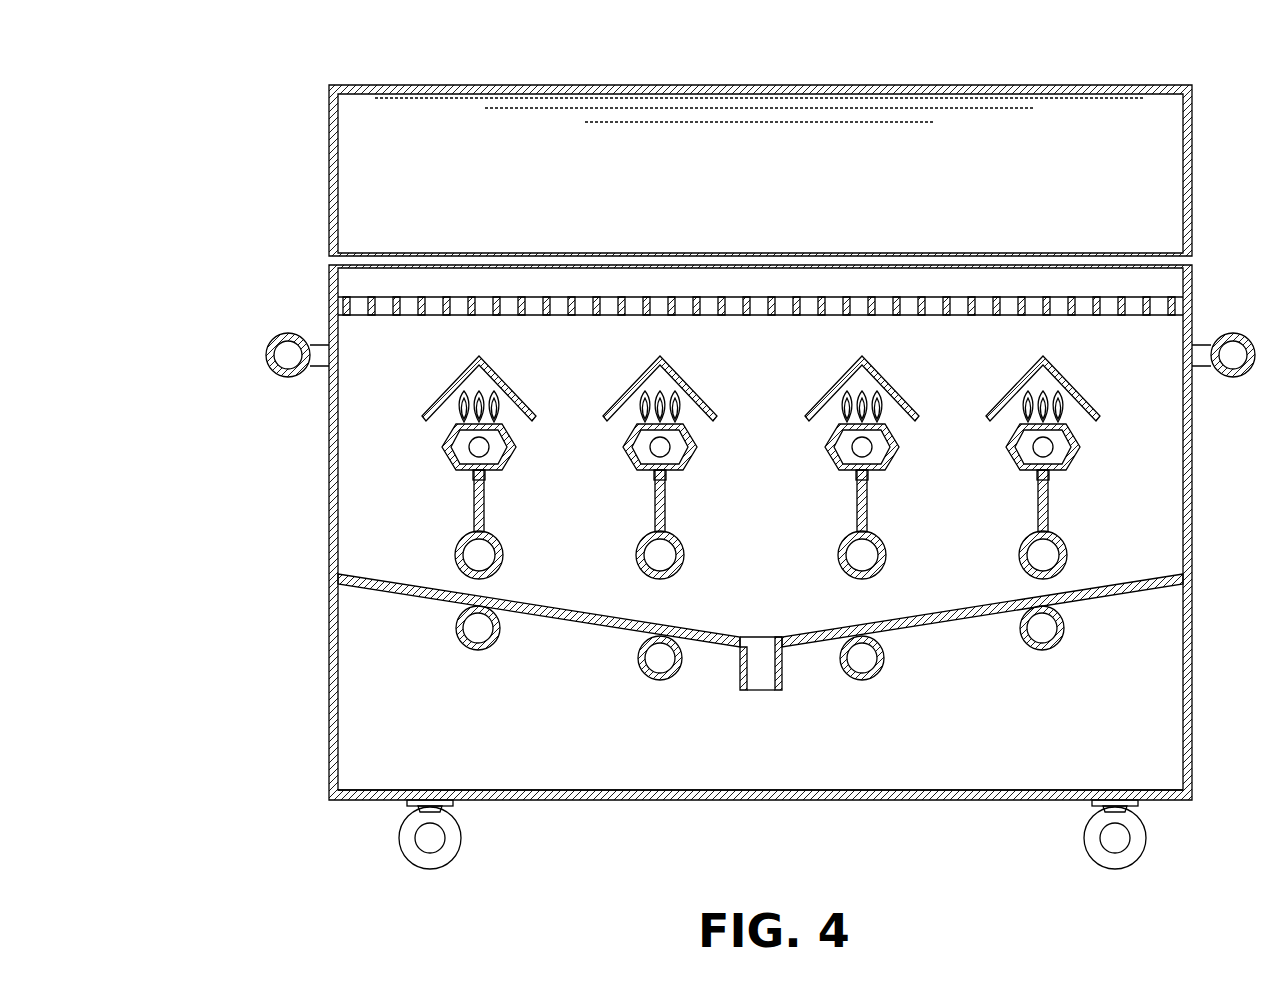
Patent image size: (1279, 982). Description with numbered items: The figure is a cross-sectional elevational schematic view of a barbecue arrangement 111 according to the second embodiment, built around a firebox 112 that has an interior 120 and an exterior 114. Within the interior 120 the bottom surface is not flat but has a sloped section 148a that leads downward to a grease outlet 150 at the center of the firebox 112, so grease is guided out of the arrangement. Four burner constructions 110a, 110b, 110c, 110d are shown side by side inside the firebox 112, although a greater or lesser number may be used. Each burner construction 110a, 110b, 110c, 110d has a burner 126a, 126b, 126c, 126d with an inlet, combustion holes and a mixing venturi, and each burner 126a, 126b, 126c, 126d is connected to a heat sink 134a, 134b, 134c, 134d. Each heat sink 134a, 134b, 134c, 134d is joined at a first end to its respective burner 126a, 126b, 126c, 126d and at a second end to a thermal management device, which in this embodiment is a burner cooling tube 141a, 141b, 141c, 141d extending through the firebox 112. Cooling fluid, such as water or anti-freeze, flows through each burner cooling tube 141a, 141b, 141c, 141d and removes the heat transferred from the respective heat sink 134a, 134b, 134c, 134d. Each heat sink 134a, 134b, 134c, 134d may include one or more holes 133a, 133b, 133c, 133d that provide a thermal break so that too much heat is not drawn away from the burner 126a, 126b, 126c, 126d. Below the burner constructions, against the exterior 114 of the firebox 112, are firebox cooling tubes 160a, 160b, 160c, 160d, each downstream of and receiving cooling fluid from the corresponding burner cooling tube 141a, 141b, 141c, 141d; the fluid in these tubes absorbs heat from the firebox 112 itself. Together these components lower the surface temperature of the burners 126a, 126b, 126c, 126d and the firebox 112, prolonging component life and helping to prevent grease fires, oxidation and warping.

The barbecue arrangement 111 is at (235, 97).
The firebox 112 is at (1128, 358).
The exterior 114 is at (990, 645).
The interior 120 is at (1098, 545).
The burner construction 110a is at (365, 500).
The burner construction 110b is at (700, 507).
The burner construction 110c is at (893, 507).
The burner construction 110d is at (1100, 447).
The burner 126a is at (445, 440).
The burner 126b is at (619, 446).
The burner 126c is at (821, 446).
The burner 126d is at (1002, 446).
The holes 133a is at (484, 500).
The holes 133b is at (698, 501).
The holes 133c is at (899, 501).
The holes 133d is at (1081, 501).
The heat sink 134a is at (474, 478).
The heat sink 134b is at (612, 468).
The heat sink 134c is at (814, 468).
The heat sink 134d is at (995, 468).
The burner cooling tube 141a is at (458, 552).
The burner cooling tube 141b is at (621, 550).
The burner cooling tube 141c is at (823, 550).
The burner cooling tube 141d is at (1004, 550).
The sloped section 148a is at (865, 625).
The grease outlet 150 is at (765, 680).
The firebox cooling tube 160a is at (457, 626).
The firebox cooling tube 160b is at (640, 650).
The firebox cooling tube 160c is at (883, 656).
The firebox cooling tube 160d is at (1063, 630).